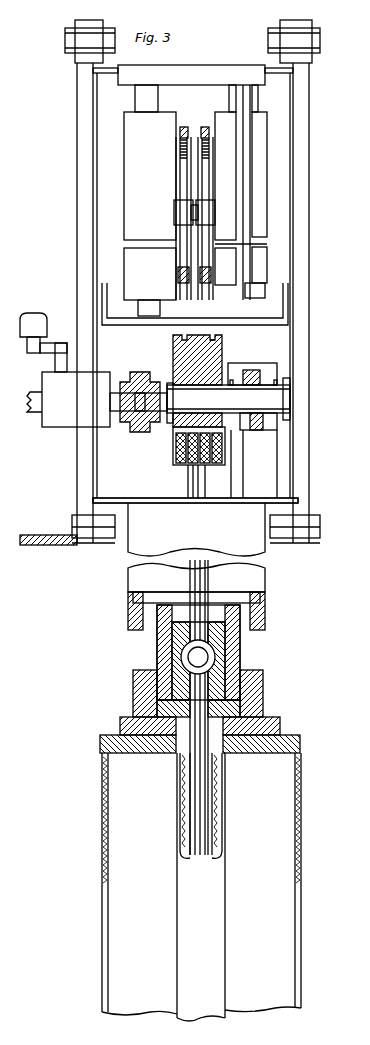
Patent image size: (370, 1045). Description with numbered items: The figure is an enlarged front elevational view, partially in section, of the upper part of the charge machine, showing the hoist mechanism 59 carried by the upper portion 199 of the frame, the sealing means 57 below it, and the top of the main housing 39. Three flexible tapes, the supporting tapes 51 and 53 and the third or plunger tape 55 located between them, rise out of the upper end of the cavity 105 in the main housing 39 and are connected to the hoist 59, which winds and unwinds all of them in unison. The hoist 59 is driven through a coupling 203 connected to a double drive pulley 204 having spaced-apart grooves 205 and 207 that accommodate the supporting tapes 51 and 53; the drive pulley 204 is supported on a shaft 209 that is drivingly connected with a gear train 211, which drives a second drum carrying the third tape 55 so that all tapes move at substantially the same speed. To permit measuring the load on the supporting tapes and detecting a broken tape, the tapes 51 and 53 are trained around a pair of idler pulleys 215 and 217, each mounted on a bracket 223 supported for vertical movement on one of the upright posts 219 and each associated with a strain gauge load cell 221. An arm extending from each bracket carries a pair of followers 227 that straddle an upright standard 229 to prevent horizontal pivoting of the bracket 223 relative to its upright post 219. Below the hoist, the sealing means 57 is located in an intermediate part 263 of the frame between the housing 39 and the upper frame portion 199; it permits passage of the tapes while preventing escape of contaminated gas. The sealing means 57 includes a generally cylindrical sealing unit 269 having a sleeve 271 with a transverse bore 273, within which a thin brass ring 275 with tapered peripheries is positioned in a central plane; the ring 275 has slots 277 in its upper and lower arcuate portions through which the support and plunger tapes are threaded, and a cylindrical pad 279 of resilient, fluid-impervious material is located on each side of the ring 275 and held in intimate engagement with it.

The upright posts 219 is at (142, 102).
The upright standard 229 is at (245, 127).
The idler pulley 215 is at (183, 157).
The idler pulley 217 is at (205, 160).
The bracket 223 is at (145, 213).
The upper portion of the frame 199 is at (302, 205).
The followers 227 is at (230, 257).
The strain gauge load cells 221 is at (138, 273).
The groove 205 is at (173, 380).
The drive pulley 204 is at (182, 367).
The groove 207 is at (222, 336).
The gear train 211 is at (265, 372).
The shaft 209 is at (270, 395).
The coupling 203 is at (132, 430).
The hoist mechanism 59 is at (263, 459).
The flexible member (supporting tape) 51 is at (187, 488).
The third tape 55 is at (203, 495).
The flexible member (supporting tape) 53 is at (210, 490).
The slots 277 is at (170, 640).
The cylindrical pad 279 is at (175, 648).
The sleeve 271 is at (218, 623).
The thin ring 275 is at (217, 660).
The sealing unit 269 is at (185, 650).
The intermediate part of the frame 263 is at (268, 648).
The sealing means 57 is at (272, 660).
The transverse bore 273 is at (162, 672).
The main housing 39 is at (300, 897).
The cavity 105 is at (213, 930).